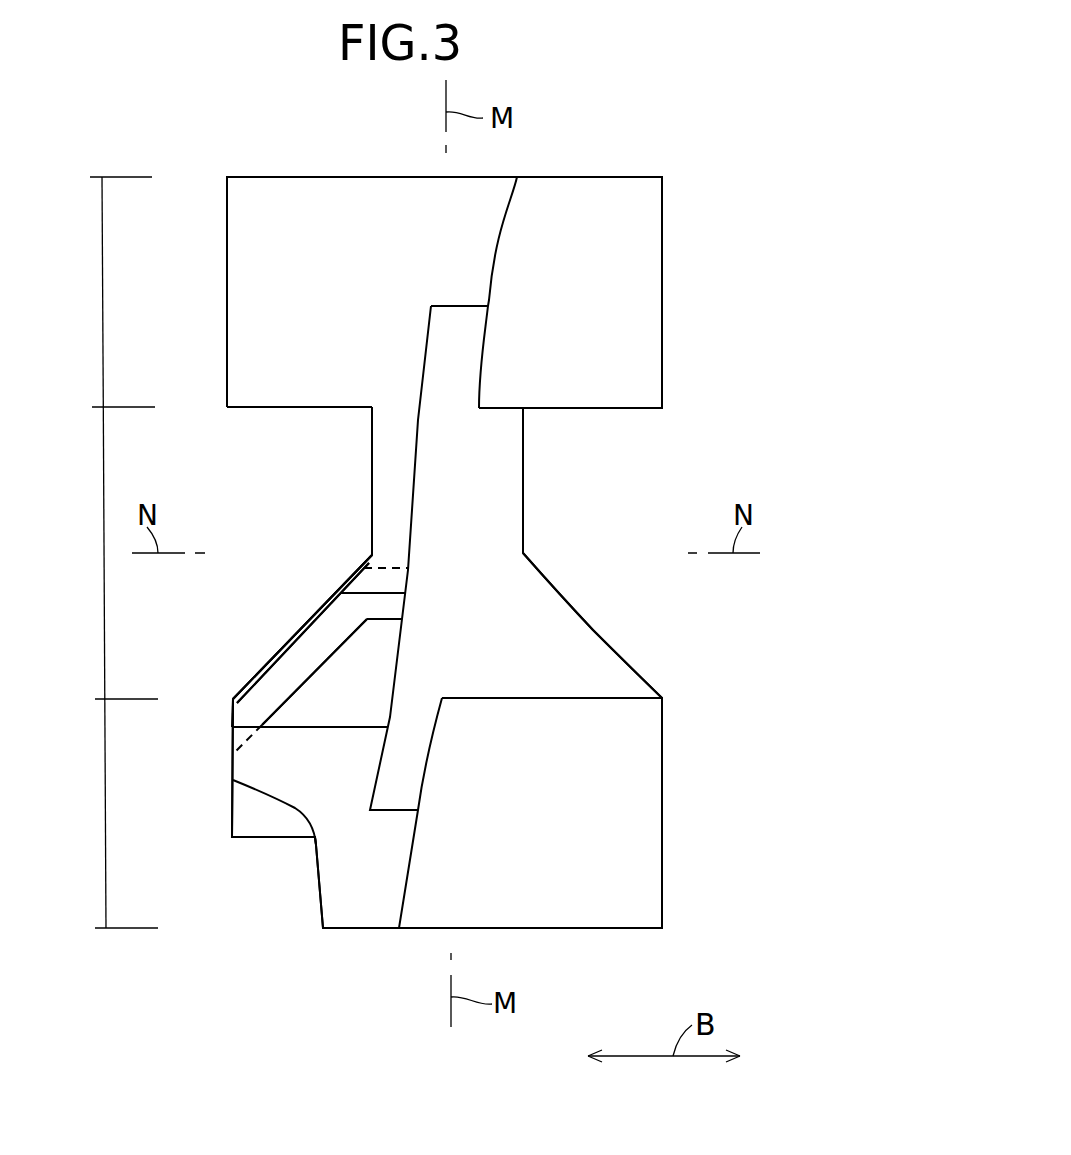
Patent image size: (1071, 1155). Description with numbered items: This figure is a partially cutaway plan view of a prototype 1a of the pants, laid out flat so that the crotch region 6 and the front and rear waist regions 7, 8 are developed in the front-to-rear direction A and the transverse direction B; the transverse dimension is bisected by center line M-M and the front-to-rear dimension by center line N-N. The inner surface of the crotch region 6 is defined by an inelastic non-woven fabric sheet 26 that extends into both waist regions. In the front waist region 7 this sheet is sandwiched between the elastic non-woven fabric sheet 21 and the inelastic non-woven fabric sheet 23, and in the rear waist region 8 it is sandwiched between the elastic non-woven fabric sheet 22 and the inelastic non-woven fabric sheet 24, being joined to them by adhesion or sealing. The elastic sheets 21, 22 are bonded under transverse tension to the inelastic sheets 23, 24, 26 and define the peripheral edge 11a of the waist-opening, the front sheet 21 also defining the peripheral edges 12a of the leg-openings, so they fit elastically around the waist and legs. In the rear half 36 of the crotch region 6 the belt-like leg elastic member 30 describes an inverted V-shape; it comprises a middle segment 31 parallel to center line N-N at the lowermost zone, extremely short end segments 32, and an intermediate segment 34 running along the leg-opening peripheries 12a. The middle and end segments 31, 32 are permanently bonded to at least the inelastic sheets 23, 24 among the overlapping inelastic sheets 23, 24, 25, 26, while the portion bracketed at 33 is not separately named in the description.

The prototype of the pants 1a is at (645, 123).
The peripheral edge of the waist-opening 11a is at (573, 177).
The peripheral edges of the leg-openings 12a is at (378, 458).
The elastic non-woven fabric sheet 21 is at (520, 232).
The elastic non-woven fabric sheet 22 is at (430, 862).
The inelastic non-woven fabric sheet 23 is at (227, 235).
The inelastic non-woven fabric sheet 24 is at (333, 890).
The inelastic non-woven fabric sheet 25 is at (243, 812).
The inelastic non-woven fabric sheet 26 is at (508, 479).
The leg elastic member 30 is at (287, 703).
The middle segment 31 is at (395, 605).
The end segments 32 is at (240, 712).
The inclined portion 33 is at (260, 598).
The intermediate segment 34 is at (287, 663).
The rear half of the crotch region 36 is at (588, 636).
The crotch region 6 is at (102, 551).
The front waist region 7 is at (102, 290).
The rear waist region 8 is at (106, 812).